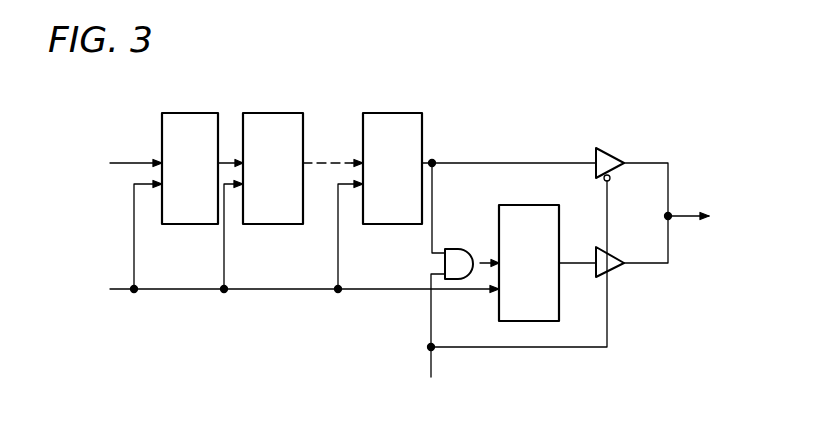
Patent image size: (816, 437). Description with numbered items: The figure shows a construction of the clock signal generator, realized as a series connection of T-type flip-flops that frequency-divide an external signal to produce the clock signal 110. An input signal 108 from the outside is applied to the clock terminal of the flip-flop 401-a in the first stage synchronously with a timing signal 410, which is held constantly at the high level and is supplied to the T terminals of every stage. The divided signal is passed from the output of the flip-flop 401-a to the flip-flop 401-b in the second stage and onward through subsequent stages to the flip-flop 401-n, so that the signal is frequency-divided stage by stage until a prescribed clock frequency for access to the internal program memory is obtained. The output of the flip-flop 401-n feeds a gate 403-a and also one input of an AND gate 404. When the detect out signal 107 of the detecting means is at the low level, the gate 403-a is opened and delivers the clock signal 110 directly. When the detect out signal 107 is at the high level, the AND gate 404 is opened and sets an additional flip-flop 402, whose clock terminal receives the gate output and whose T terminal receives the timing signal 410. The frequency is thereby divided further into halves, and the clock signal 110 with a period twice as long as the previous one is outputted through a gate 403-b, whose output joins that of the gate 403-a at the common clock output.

The input signal 108 is at (95, 147).
The flip-flop in a first stage 401-a is at (208, 97).
The flip-flop in a second stage 401-b is at (298, 97).
The flip-flop in a subsequent stage 401-n is at (418, 97).
The timing signal 410 is at (262, 255).
The additional flip-flop 402 is at (548, 205).
The AND gate 404 is at (462, 249).
The gate 403-a is at (603, 150).
The gate 403-b is at (610, 270).
The clock signal 110 is at (684, 213).
The detect out signal 107 is at (502, 308).